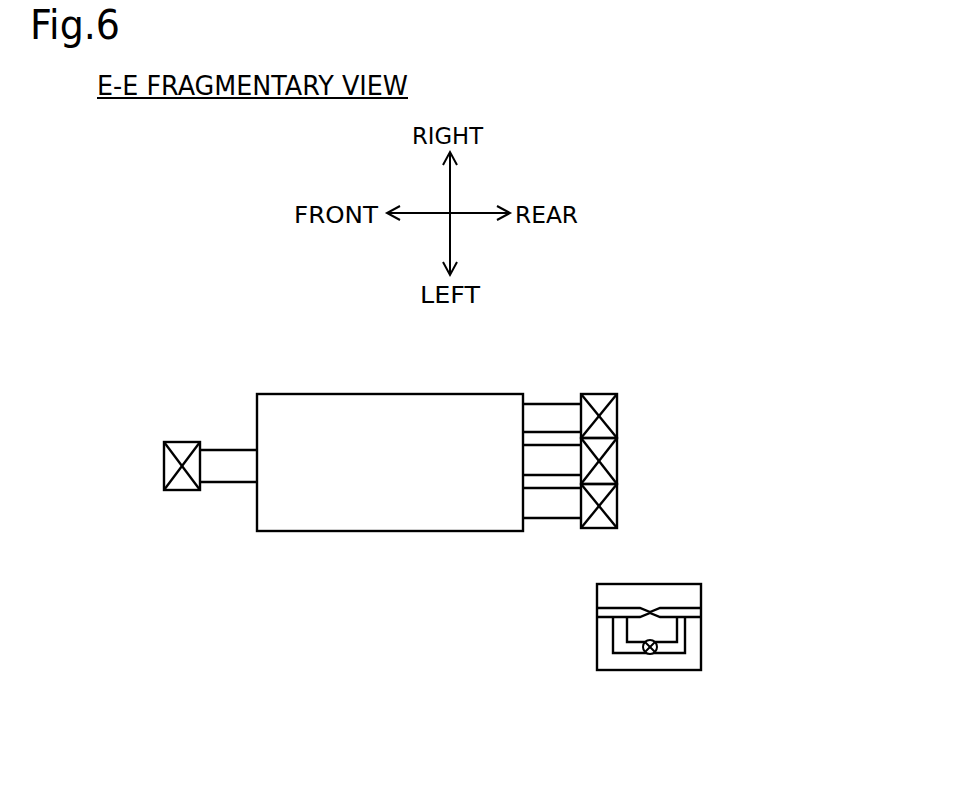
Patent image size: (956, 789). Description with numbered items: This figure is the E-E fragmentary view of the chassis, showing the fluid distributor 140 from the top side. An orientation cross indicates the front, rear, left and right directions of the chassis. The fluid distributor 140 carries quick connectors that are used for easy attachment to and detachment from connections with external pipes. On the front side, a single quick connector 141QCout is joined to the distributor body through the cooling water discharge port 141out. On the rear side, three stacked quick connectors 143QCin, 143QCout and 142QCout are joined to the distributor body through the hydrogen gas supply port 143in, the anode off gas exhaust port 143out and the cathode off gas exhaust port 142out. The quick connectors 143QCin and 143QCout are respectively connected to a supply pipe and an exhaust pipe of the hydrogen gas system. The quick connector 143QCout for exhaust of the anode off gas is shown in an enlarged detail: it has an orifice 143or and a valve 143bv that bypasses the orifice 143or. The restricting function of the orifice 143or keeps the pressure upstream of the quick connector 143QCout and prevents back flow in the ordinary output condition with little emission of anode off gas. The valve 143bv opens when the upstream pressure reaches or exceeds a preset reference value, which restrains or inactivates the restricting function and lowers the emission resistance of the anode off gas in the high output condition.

The fluid distributor 140 is at (407, 479).
The quick connector 141QCout is at (185, 441).
The cooling water discharge port 141out is at (212, 450).
The hydrogen gas supply port 143in is at (546, 404).
The anode off gas exhaust port 143out is at (567, 476).
The cathode off gas exhaust port 142out is at (573, 518).
The quick connector 143QCin is at (618, 415).
The quick connector 143QCout is at (618, 458).
The quick connector 142QCout is at (618, 505).
The orifice 143or is at (648, 608).
The valve 143bv is at (655, 653).